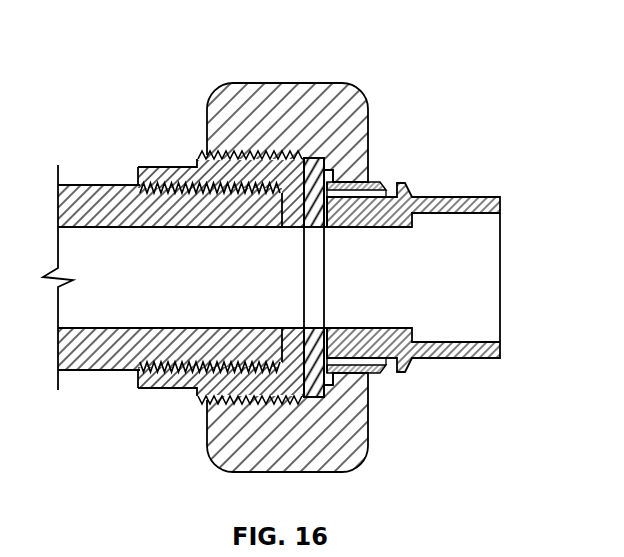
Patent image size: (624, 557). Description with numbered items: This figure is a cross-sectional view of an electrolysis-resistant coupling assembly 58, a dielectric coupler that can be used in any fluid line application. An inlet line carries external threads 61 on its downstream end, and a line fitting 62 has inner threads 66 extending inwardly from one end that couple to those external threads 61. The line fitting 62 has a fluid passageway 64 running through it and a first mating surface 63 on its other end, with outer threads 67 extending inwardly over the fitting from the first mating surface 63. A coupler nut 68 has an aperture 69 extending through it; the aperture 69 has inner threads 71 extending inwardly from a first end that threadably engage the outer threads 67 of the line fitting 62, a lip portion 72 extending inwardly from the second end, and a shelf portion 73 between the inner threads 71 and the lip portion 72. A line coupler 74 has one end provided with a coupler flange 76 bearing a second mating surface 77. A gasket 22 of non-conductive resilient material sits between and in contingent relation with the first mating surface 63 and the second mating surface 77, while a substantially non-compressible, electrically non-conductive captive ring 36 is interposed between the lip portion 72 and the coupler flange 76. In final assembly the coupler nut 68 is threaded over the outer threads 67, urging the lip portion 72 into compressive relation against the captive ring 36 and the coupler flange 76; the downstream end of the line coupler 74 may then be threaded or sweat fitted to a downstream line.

The gasket 22 is at (313, 400).
The captive ring 36 is at (392, 297).
The electrolysis-resistant coupling assembly 58 is at (73, 373).
The external threads 61 is at (136, 188).
The line fitting 62 is at (186, 276).
The first mating surface 63 is at (300, 158).
The fluid passageway 64 is at (265, 229).
The inner threads 66 is at (162, 194).
The outer threads 67 is at (212, 152).
The coupler nut 68 is at (349, 86).
The aperture 69 is at (275, 220).
The inner threads 71 is at (213, 407).
The lip portion 72 is at (348, 183).
The shelf portion 73 is at (342, 174).
The line coupler 74 is at (423, 265).
The coupler flange 76 is at (331, 170).
The second mating surface 77 is at (333, 338).